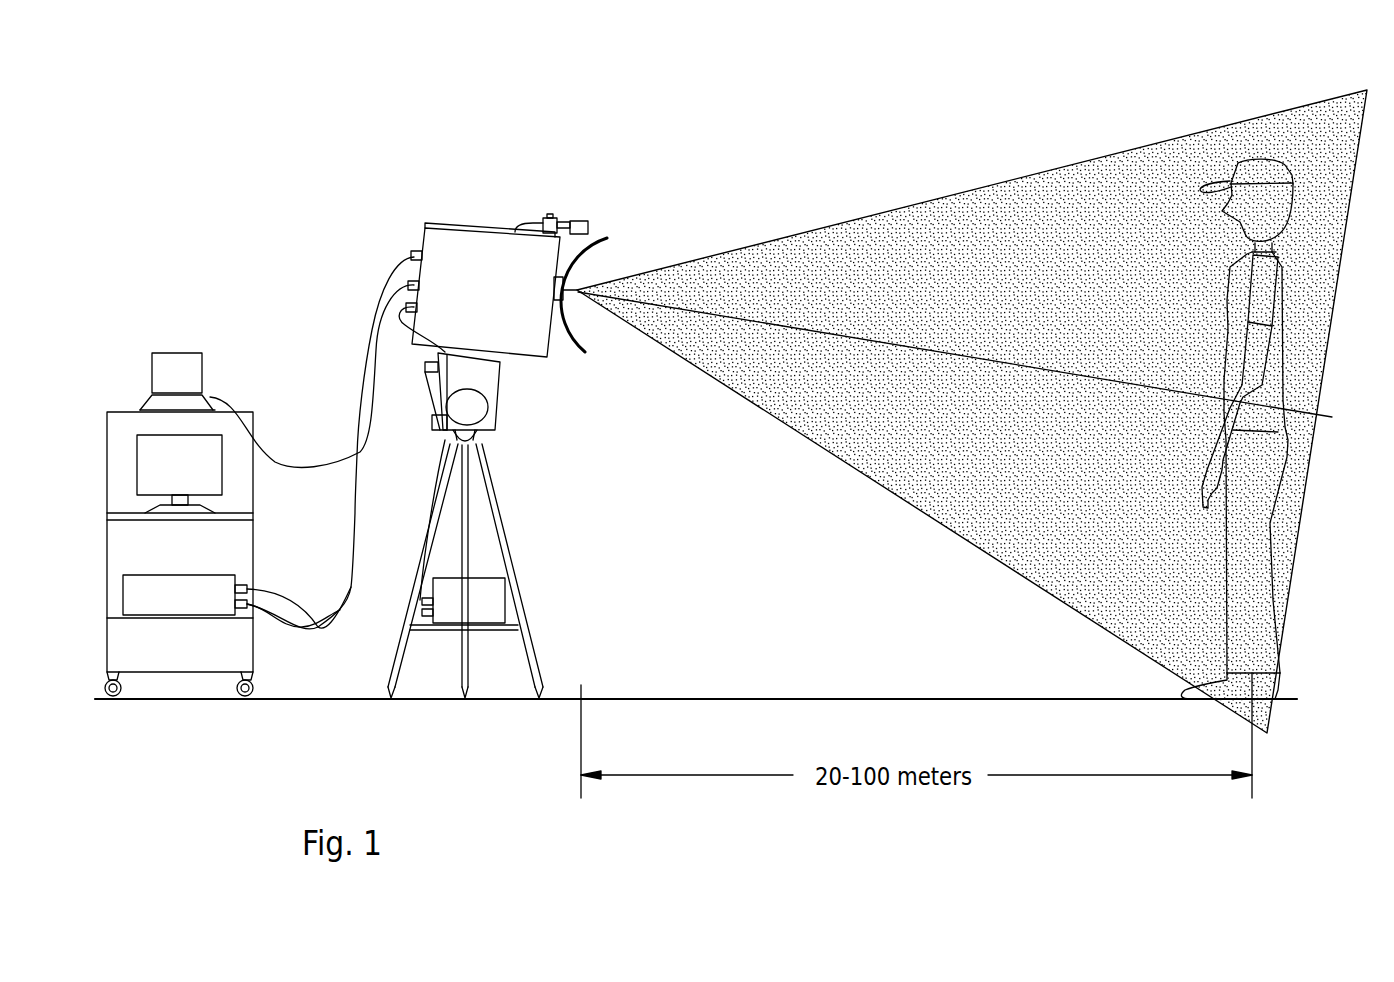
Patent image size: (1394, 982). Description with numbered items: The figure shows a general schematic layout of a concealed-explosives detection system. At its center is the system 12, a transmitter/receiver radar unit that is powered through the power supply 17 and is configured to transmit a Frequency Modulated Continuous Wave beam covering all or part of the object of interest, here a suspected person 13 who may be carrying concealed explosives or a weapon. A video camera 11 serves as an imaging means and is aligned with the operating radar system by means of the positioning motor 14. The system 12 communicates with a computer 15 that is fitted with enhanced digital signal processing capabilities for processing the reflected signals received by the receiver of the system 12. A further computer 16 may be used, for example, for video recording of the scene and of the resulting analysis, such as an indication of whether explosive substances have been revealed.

The video camera 11 is at (515, 182).
The system 12 is at (395, 258).
The suspected person 13 is at (1240, 432).
The positioning motor 14 is at (540, 423).
The computer 15 is at (219, 565).
The computer 16 is at (238, 338).
The power supply 17 is at (585, 579).